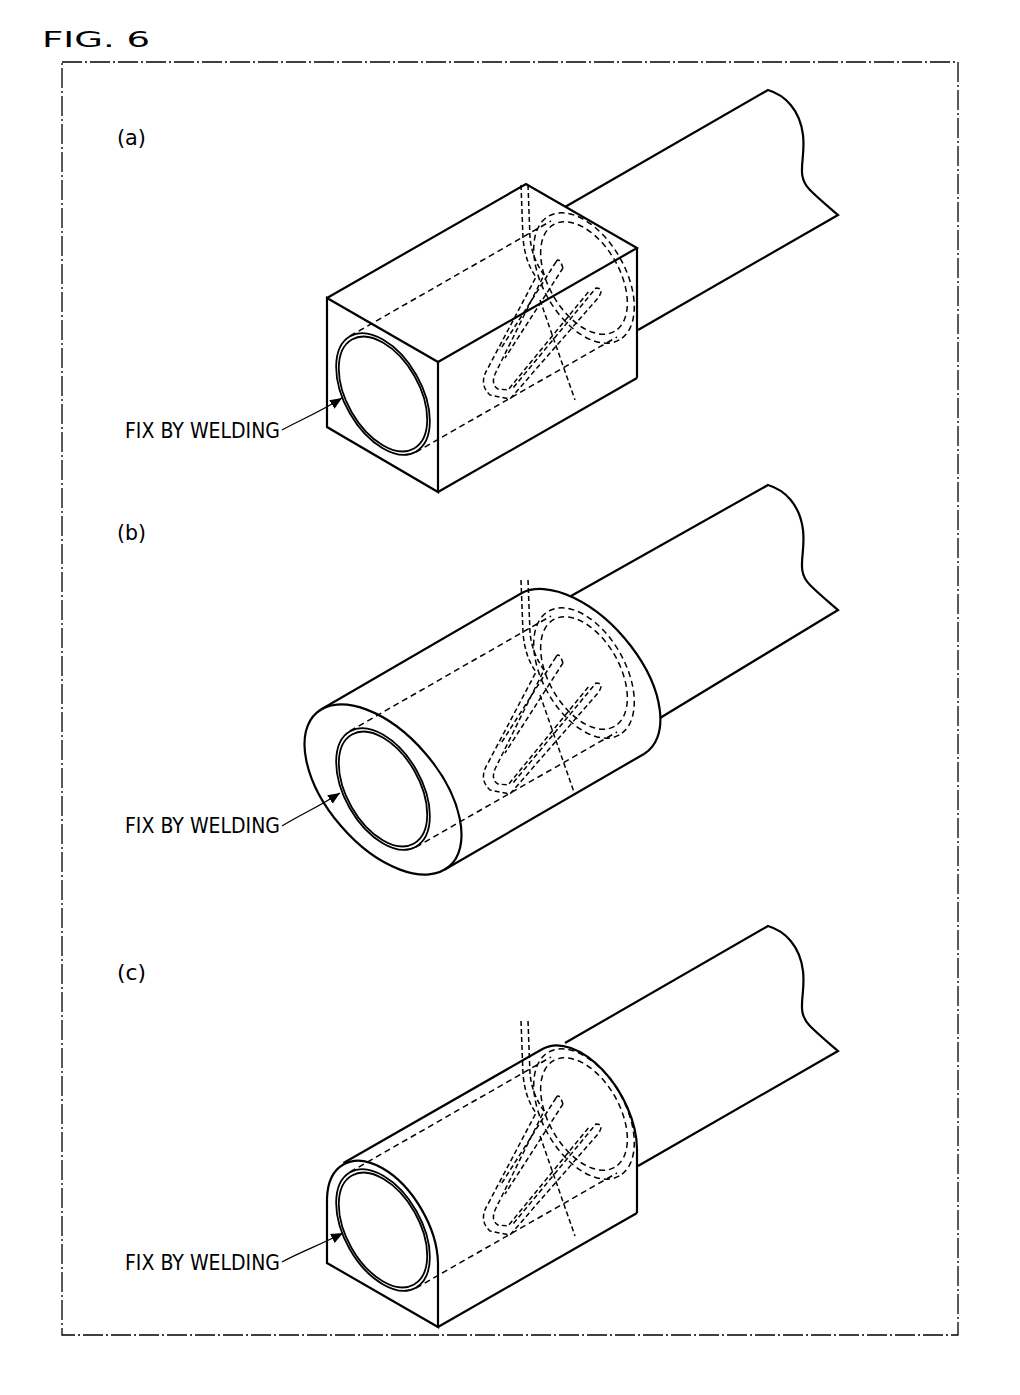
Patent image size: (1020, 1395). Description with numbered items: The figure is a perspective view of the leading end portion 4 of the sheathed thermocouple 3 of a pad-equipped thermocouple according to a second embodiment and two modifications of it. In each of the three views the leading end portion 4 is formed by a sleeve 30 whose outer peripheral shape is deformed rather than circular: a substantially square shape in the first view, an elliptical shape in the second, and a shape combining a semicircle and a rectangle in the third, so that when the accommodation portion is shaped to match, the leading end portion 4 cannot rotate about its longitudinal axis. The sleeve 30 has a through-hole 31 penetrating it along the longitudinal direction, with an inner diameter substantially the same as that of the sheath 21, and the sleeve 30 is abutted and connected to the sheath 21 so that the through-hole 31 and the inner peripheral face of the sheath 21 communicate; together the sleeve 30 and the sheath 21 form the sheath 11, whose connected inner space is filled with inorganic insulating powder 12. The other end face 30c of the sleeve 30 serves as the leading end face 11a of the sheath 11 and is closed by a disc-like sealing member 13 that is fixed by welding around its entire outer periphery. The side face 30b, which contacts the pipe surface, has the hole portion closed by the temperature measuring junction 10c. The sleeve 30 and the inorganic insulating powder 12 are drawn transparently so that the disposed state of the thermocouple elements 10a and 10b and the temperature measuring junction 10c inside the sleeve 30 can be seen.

The sheathed thermocouple 3 is at (701, 658).
The leading end portion 4 is at (701, 658).
The thermocouple element 10a is at (513, 303).
The thermocouple element 10b is at (553, 373).
The temperature measuring junction 10c is at (510, 385).
The sheath 11 is at (678, 140).
The leading end face 11a is at (369, 780).
The inorganic insulating powder 12 is at (487, 260).
The sealing member 13 is at (383, 403).
The sheath 21 is at (625, 200).
The sleeve 30 is at (418, 245).
The side face 30b is at (380, 458).
The other end face 30c is at (333, 317).
The through-hole 31 is at (520, 250).